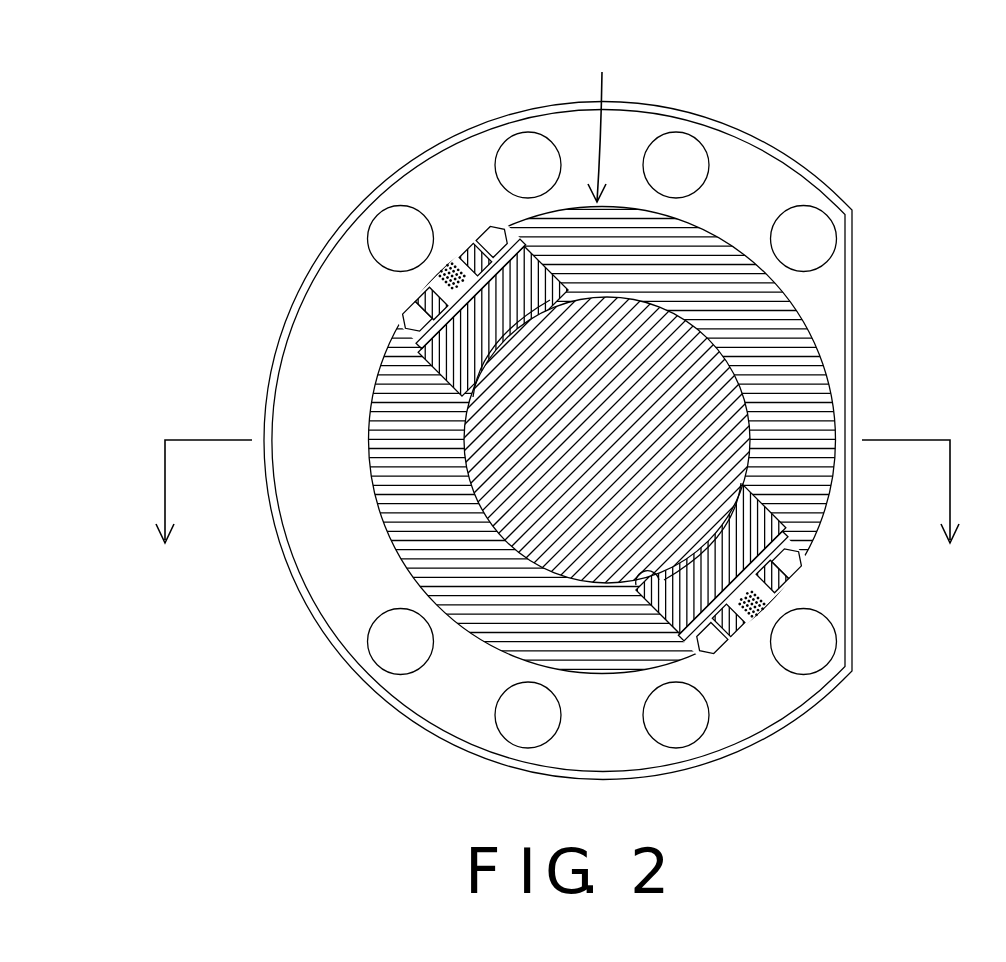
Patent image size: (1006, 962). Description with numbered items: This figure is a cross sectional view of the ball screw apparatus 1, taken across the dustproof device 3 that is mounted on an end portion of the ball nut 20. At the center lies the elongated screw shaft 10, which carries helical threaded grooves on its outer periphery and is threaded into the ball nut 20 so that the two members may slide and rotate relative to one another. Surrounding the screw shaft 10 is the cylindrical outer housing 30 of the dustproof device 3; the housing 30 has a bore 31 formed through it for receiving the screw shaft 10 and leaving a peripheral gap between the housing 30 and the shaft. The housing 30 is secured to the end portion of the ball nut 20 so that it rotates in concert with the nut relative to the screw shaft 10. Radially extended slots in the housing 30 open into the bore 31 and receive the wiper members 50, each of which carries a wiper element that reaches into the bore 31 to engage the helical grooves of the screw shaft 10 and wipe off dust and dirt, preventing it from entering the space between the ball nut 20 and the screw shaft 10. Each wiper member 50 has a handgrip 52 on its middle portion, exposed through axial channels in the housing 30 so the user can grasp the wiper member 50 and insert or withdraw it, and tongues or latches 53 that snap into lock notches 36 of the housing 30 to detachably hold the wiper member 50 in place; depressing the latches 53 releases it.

The ball screw apparatus 1 is at (555, 430).
The screw shaft 10 is at (523, 433).
The ball nut 20 is at (802, 162).
The housing 30 is at (710, 650).
The bore 31 is at (640, 585).
The lock notch 36 is at (492, 247).
The wiper member 50 is at (790, 365).
The handgrip 52 is at (468, 255).
The latch 53 is at (428, 297).
The dustproof device 3 is at (973, 92).